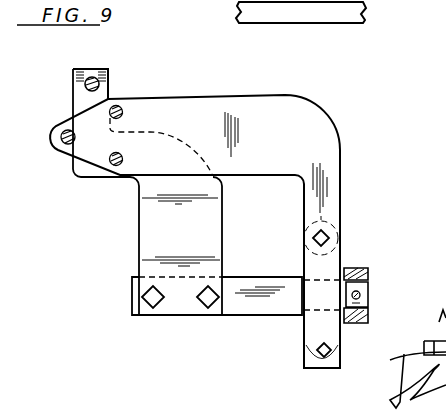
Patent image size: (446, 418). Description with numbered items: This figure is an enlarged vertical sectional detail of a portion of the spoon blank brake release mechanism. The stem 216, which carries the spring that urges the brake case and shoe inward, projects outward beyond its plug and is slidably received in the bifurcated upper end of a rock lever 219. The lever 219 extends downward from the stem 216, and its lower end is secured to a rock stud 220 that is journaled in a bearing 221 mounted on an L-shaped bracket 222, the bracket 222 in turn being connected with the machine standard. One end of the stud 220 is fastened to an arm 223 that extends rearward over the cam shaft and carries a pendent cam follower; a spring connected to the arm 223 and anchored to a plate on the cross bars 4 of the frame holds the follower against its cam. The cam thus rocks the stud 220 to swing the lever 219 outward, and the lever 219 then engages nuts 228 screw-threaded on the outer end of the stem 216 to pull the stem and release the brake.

The cross bars 4 is at (336, 15).
The stem 216 is at (100, 80).
The rock lever 219 is at (152, 240).
The rock stud 220 is at (263, 307).
The bearing 221 is at (330, 255).
The L-shaped bracket 222 is at (313, 188).
The arm 223 is at (368, 272).
The nuts 228 is at (91, 76).